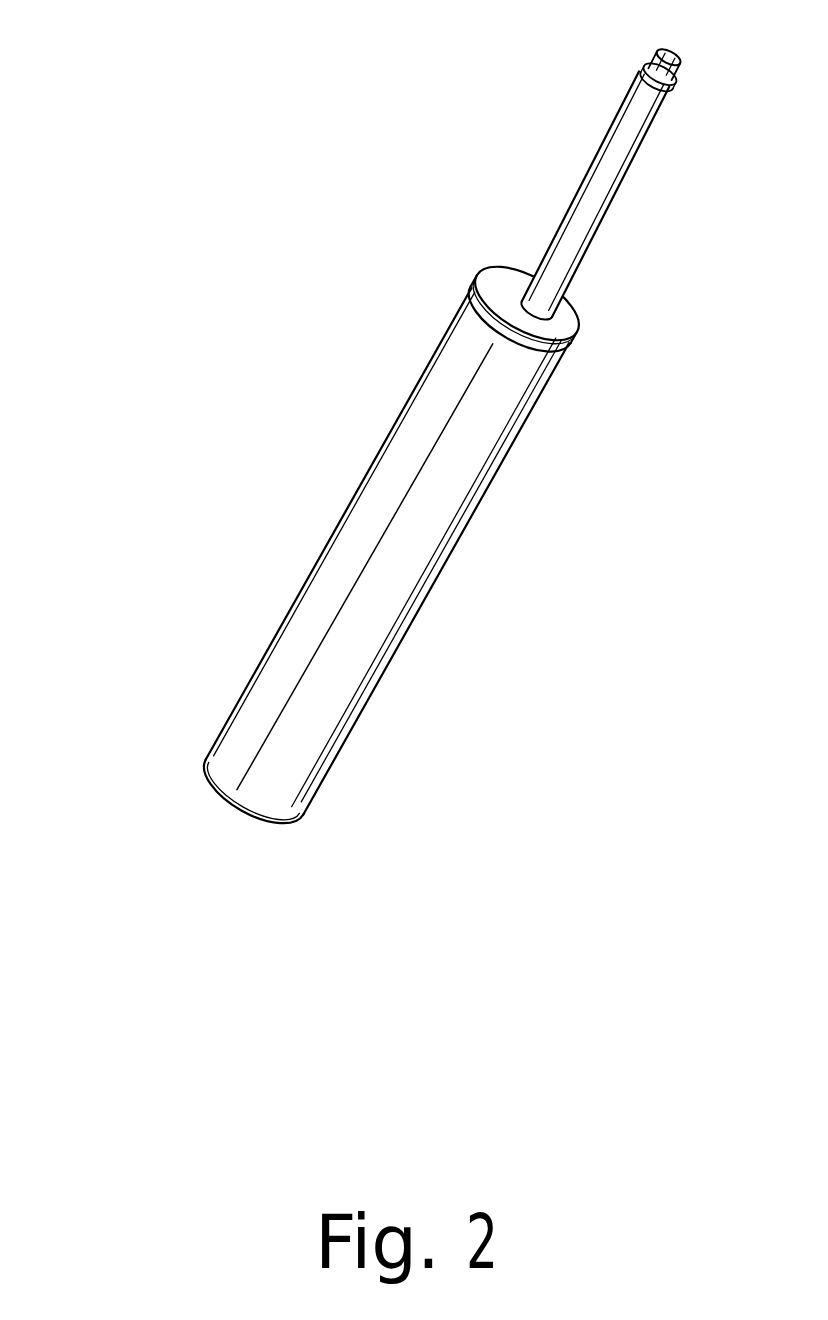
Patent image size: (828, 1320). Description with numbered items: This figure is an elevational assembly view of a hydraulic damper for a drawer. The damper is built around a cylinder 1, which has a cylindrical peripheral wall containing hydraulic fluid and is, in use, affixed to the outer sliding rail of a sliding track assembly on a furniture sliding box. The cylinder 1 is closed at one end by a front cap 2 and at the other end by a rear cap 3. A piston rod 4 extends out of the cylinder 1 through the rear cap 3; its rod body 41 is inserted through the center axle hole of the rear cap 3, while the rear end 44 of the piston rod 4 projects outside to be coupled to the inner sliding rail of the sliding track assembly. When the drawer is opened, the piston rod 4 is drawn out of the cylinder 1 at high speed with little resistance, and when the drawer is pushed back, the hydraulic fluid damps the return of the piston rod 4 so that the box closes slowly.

The cylinder 1 is at (365, 448).
The front cap 2 is at (205, 803).
The rear cap 3 is at (480, 285).
The piston rod 4 is at (568, 173).
The rod body 41 is at (614, 127).
The rear end 44 is at (648, 76).